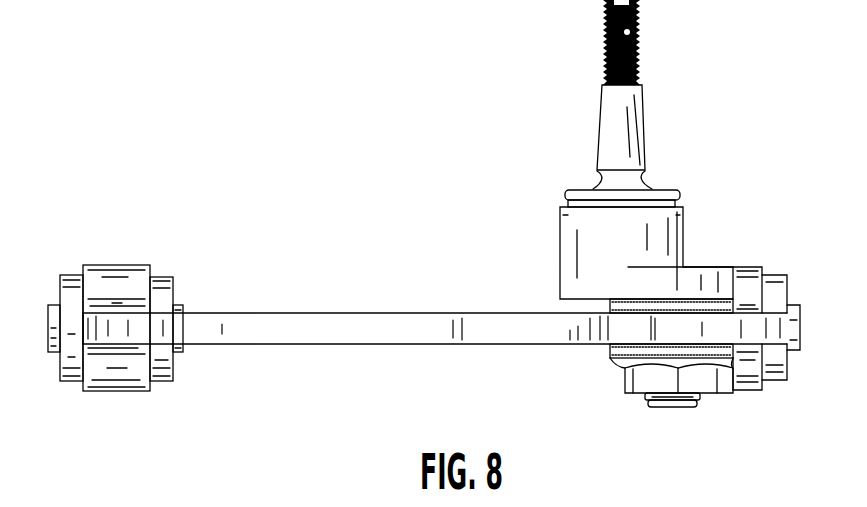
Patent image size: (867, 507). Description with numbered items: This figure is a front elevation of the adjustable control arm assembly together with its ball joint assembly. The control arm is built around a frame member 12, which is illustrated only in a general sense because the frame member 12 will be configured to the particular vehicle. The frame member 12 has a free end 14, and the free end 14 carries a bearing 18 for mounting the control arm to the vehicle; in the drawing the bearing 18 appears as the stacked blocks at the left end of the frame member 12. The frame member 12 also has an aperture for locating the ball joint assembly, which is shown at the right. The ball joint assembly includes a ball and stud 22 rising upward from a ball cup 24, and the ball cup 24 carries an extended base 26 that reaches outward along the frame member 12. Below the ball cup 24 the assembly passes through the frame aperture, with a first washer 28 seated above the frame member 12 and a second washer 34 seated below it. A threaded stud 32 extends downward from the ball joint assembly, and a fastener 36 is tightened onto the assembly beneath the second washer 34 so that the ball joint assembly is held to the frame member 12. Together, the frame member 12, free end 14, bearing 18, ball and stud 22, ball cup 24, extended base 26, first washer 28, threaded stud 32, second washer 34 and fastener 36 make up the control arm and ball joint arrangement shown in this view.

The frame member 12 is at (322, 327).
The free end 14 is at (115, 268).
The bearing 18 is at (68, 283).
The ball and stud 22 is at (630, 129).
The ball cup 24 is at (698, 198).
The extended base 26 is at (743, 280).
The first washer 28 is at (610, 310).
The threaded stud 32 is at (663, 403).
The second washer 34 is at (608, 348).
The fastener 36 is at (712, 378).